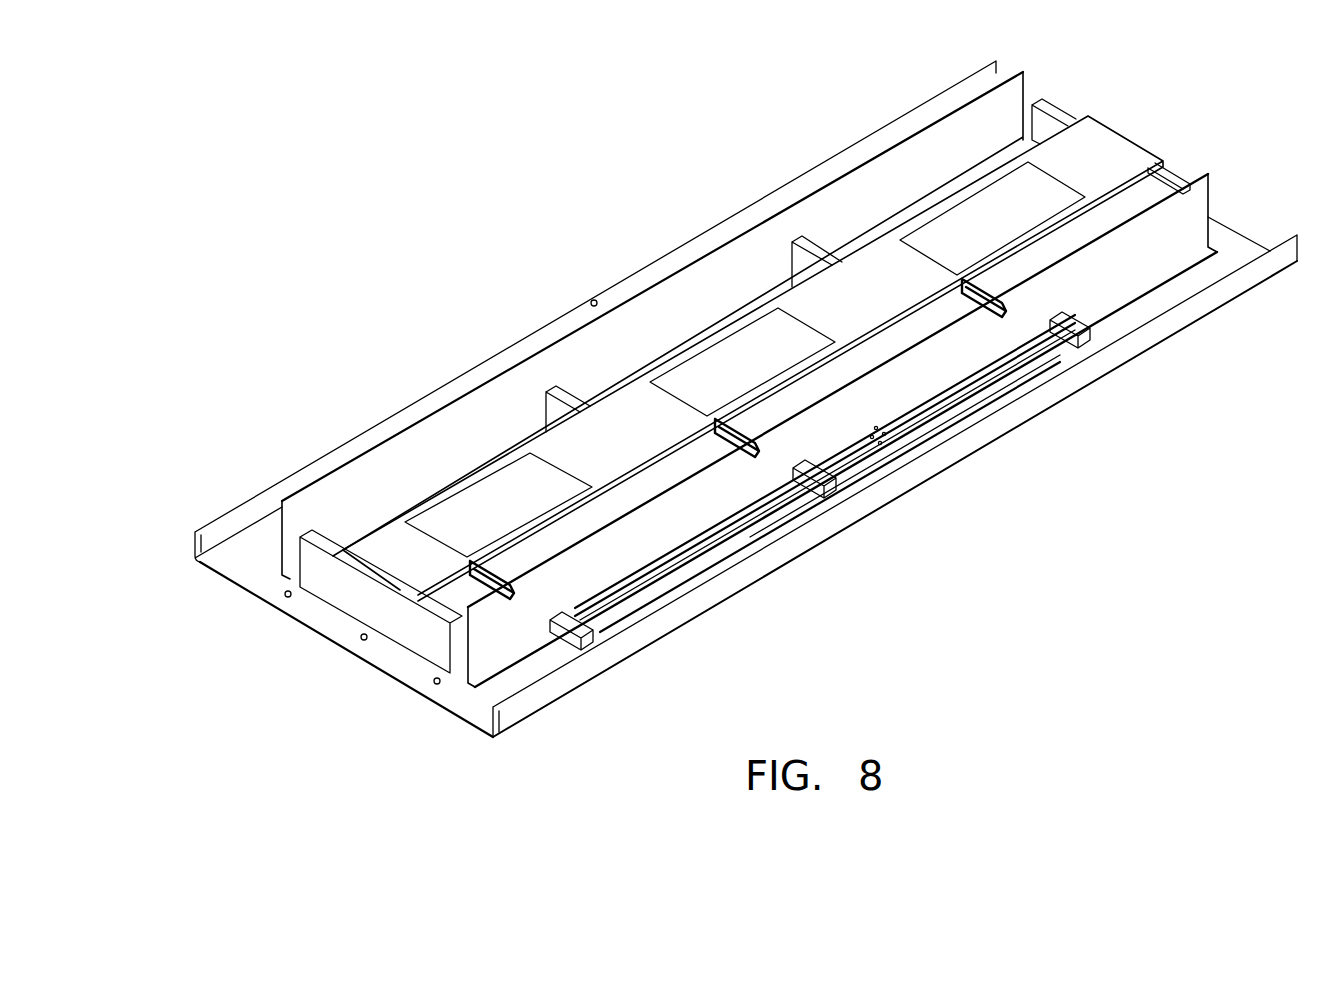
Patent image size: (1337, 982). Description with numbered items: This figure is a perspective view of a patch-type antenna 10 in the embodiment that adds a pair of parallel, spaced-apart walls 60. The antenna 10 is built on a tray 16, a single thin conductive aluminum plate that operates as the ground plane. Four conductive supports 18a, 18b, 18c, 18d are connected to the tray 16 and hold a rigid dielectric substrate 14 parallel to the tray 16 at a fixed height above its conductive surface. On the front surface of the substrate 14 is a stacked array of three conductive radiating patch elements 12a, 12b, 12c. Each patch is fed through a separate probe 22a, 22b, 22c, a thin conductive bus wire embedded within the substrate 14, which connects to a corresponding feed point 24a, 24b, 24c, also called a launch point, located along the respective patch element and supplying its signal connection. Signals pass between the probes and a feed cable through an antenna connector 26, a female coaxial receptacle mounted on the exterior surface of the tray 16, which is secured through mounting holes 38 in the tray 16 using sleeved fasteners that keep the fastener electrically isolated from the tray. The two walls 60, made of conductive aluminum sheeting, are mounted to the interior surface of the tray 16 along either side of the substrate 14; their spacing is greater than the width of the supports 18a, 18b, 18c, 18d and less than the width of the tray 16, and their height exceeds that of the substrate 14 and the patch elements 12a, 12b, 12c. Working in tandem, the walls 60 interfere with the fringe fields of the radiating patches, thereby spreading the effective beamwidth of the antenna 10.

The patch-type antenna 10 is at (452, 192).
The radiating patch element 12a is at (1040, 187).
The radiating patch element 12b is at (790, 330).
The radiating patch element 12c is at (540, 472).
The substrate 14 is at (1108, 136).
The tray 16 is at (334, 634).
The support 18a is at (1170, 184).
The support 18b is at (812, 246).
The support 18c is at (566, 398).
The support 18d is at (325, 534).
The probe 22a is at (966, 282).
The probe 22b is at (738, 426).
The probe 22c is at (478, 572).
The feed point 24a is at (960, 236).
The feed point 24b is at (712, 385).
The feed point 24c is at (465, 520).
The antenna connector 26 is at (872, 438).
The mounting hole 38 is at (862, 450).
The wall 60 is at (1018, 82).